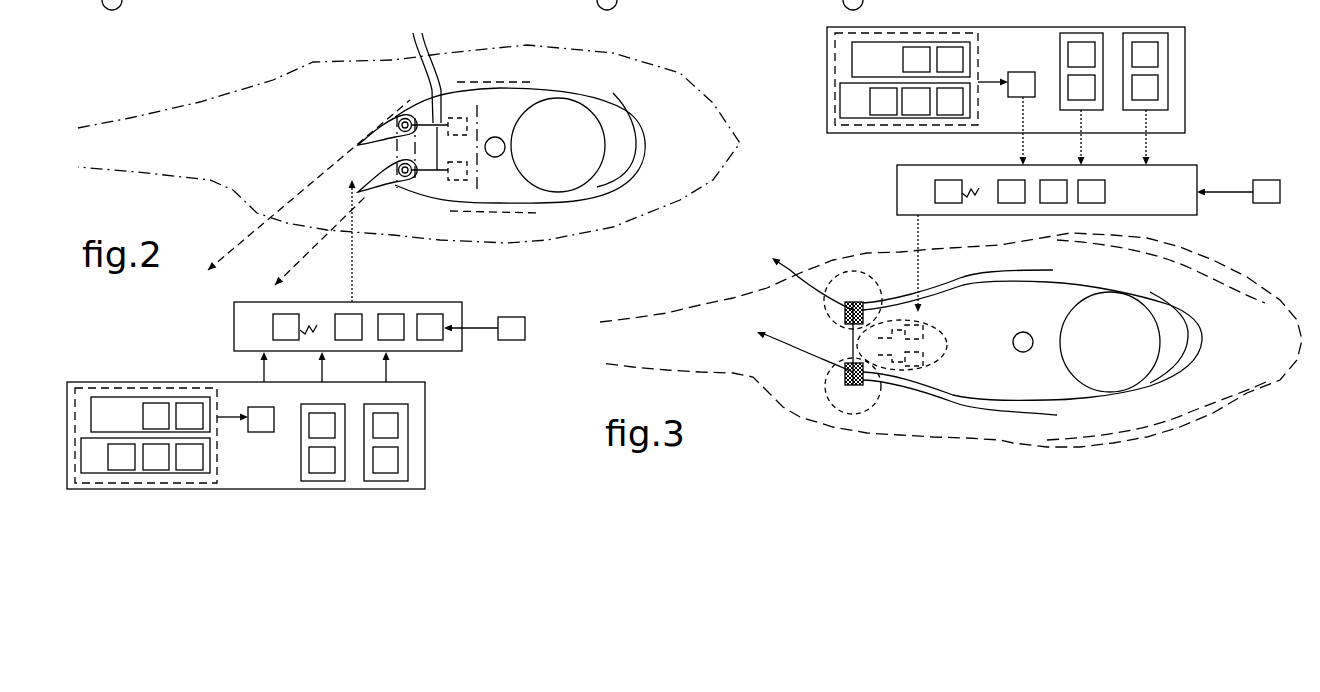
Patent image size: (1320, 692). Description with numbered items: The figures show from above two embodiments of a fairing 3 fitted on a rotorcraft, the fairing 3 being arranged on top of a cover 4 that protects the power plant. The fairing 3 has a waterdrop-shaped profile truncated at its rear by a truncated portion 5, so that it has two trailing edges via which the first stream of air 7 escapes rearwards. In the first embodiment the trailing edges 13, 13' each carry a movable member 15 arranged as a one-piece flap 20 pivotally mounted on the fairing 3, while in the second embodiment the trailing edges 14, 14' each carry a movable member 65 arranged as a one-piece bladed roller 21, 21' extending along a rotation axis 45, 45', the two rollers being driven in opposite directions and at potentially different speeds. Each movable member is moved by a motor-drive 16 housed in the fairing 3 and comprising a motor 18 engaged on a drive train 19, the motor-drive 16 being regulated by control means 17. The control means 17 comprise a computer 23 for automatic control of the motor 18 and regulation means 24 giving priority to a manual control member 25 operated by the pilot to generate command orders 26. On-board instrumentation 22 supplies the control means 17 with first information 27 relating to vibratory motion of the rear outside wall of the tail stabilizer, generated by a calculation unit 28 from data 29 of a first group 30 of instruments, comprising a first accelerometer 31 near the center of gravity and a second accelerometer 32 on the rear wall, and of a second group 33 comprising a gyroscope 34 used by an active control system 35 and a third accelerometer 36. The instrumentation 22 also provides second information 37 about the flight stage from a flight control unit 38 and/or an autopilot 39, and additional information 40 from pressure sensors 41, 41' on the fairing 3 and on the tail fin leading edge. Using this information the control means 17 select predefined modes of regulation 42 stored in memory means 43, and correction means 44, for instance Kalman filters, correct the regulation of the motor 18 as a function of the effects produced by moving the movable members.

In FIG. 2, the fairing 3 is at (495, 147).
In FIG. 3, the fairing 3 is at (1023, 342).
In FIG. 2, the cover 4 is at (655, 68).
In FIG. 3, the cover 4 is at (1243, 273).
In FIG. 2, the truncated portion 5 is at (390, 152).
In FIG. 3, the truncated portion 5 is at (852, 346).
In FIG. 2, the first stream of air 7 is at (520, 146).
In FIG. 3, the first stream of air 7 is at (1032, 345).
In FIG. 2, the trailing edge 13 is at (394, 78).
In FIG. 2, the trailing edge 13' is at (403, 218).
In FIG. 3, the trailing edge 14 is at (817, 265).
In FIG. 3, the trailing edge 14' is at (843, 382).
In FIG. 2, the movable member 15 is at (343, 127).
In FIG. 2, the motor-drive 16 is at (477, 128).
In FIG. 3, the motor-drive 16 is at (950, 348).
In FIG. 2, the control means 17 is at (263, 337).
In FIG. 3, the control means 17 is at (926, 202).
In FIG. 2, the motor 18 is at (468, 118).
In FIG. 3, the motor 18 is at (926, 336).
In FIG. 2, the drive train 19 is at (424, 92).
In FIG. 3, the drive train 19 is at (900, 343).
In FIG. 2, the flap 20 is at (397, 130).
In FIG. 3, the bladed roller 21 is at (757, 299).
In FIG. 3, the bladed roller 21' is at (776, 355).
In FIG. 2, the on-board instrumentation 22 is at (253, 475).
In FIG. 3, the on-board instrumentation 22 is at (1013, 57).
In FIG. 2, the computer 23 is at (391, 327).
In FIG. 3, the computer 23 is at (1053, 191).
In FIG. 2, the regulation means 24 is at (430, 327).
In FIG. 3, the regulation means 24 is at (1091, 191).
In FIG. 2, the manual control member 25 is at (511, 328).
In FIG. 3, the manual control member 25 is at (1266, 191).
In FIG. 2, the command orders 26 is at (471, 319).
In FIG. 3, the command orders 26 is at (1225, 183).
In FIG. 2, the first information 27 is at (255, 367).
In FIG. 3, the first information 27 is at (1012, 131).
In FIG. 2, the calculation unit 28 is at (261, 419).
In FIG. 3, the calculation unit 28 is at (1021, 84).
In FIG. 2, the data 29 is at (232, 410).
In FIG. 3, the data 29 is at (993, 74).
In FIG. 2, the first group of on-board instruments 30 is at (104, 424).
In FIG. 3, the first group of on-board instruments 30 is at (864, 69).
In FIG. 2, the first accelerometer 31 is at (156, 416).
In FIG. 3, the first accelerometer 31 is at (916, 59).
In FIG. 2, the second accelerometer 32 is at (189, 416).
In FIG. 3, the second accelerometer 32 is at (950, 59).
In FIG. 2, the second group of on-board instruments 33 is at (86, 466).
In FIG. 3, the second group of on-board instruments 33 is at (848, 111).
In FIG. 2, the gyroscope 34 is at (121, 457).
In FIG. 3, the gyroscope 34 is at (883, 101).
In FIG. 2, the active control system 35 is at (156, 457).
In FIG. 3, the active control system 35 is at (916, 101).
In FIG. 2, the third accelerometer 36 is at (189, 457).
In FIG. 3, the third accelerometer 36 is at (950, 101).
In FIG. 2, the second information 37 is at (312, 367).
In FIG. 3, the second information 37 is at (1071, 137).
In FIG. 2, the flight control unit 38 is at (323, 442).
In FIG. 3, the flight control unit 38 is at (1081, 71).
In FIG. 2, the autopilot 39 is at (322, 460).
In FIG. 3, the autopilot 39 is at (1081, 87).
In FIG. 2, the additional information 40 is at (376, 367).
In FIG. 3, the additional information 40 is at (1136, 137).
In FIG. 2, the pressure sensor 41 is at (386, 442).
In FIG. 3, the pressure sensor 41 is at (1145, 71).
In FIG. 2, the pressure sensor 41' is at (385, 460).
In FIG. 3, the pressure sensor 41' is at (1145, 87).
In FIG. 2, the predefined modes of regulation 42 is at (286, 327).
In FIG. 3, the predefined modes of regulation 42 is at (948, 191).
In FIG. 2, the memory means 43 is at (315, 320).
In FIG. 3, the memory means 43 is at (977, 184).
In FIG. 2, the correction means 44 is at (348, 327).
In FIG. 3, the correction means 44 is at (1011, 191).
In FIG. 3, the rotation axis 45 is at (853, 266).
In FIG. 3, the rotation axis 45' is at (844, 415).
In FIG. 3, the movable member 65 is at (835, 316).